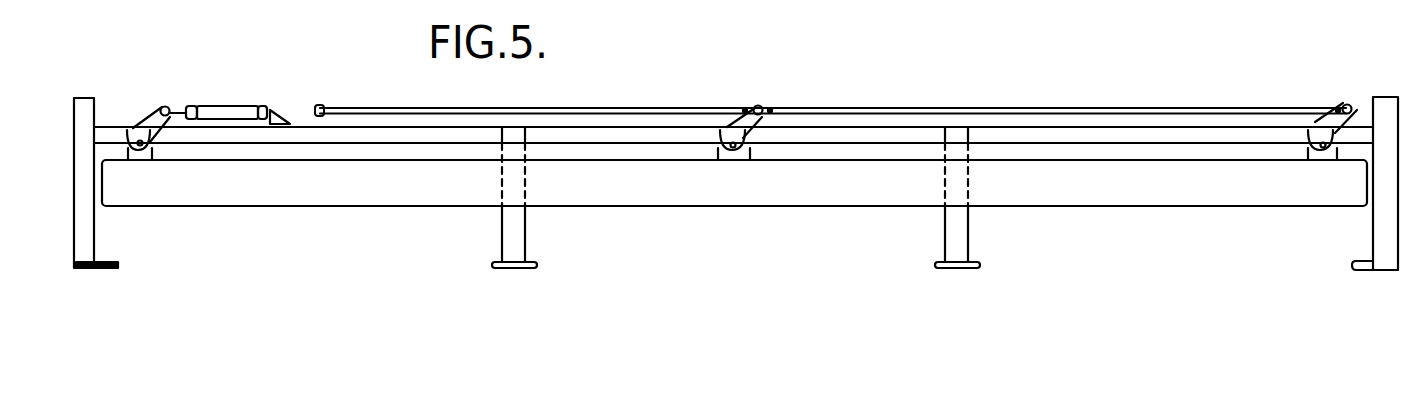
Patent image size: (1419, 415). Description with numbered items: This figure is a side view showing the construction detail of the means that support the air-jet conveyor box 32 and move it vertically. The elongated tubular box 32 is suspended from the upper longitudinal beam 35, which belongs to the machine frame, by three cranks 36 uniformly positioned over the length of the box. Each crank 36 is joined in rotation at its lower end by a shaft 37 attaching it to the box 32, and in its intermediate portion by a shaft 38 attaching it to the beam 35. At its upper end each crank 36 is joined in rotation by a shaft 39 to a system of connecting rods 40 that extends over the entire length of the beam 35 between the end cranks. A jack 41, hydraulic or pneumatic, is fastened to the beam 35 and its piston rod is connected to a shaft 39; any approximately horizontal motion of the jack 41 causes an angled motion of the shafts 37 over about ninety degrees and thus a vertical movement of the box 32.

The box 32 is at (1090, 178).
The upper longitudinal beam 35 is at (893, 135).
The crank 36 is at (1335, 122).
The shaft 37 is at (1323, 148).
The shaft 38 is at (1312, 127).
The shaft 39 is at (1347, 104).
The connecting rod 40 is at (988, 107).
The jack 41 is at (234, 106).